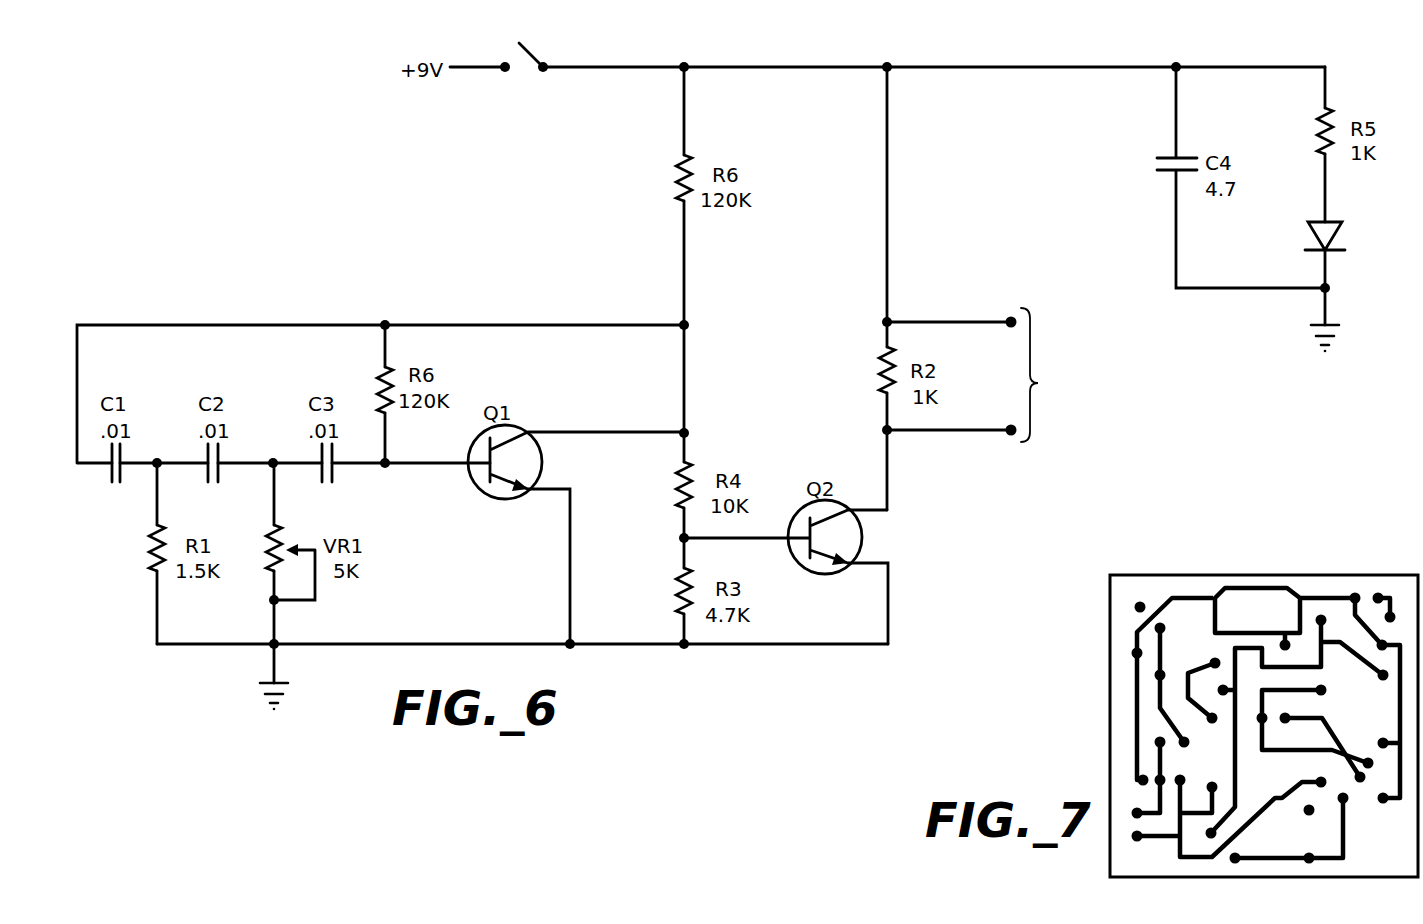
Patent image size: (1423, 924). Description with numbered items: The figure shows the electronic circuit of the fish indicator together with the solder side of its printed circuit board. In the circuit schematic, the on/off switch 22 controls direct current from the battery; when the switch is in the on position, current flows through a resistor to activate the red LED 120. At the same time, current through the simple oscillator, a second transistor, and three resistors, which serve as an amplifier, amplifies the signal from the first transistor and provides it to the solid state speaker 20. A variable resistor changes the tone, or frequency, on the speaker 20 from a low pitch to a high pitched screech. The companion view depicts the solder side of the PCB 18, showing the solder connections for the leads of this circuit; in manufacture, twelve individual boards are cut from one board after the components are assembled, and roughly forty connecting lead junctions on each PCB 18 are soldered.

In FIG. 6, the on/off switch 22 is at (531, 52).
In FIG. 6, the solid state speaker 20 is at (1025, 375).
In FIG. 6, the LED 120 is at (1312, 228).
In FIG. 7, the PCB 18 is at (1122, 712).